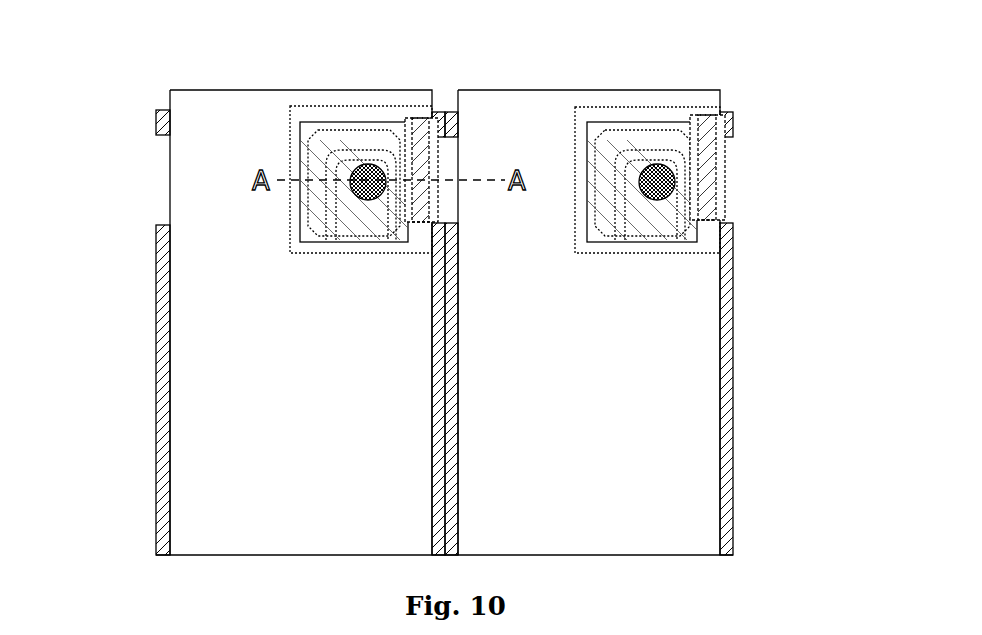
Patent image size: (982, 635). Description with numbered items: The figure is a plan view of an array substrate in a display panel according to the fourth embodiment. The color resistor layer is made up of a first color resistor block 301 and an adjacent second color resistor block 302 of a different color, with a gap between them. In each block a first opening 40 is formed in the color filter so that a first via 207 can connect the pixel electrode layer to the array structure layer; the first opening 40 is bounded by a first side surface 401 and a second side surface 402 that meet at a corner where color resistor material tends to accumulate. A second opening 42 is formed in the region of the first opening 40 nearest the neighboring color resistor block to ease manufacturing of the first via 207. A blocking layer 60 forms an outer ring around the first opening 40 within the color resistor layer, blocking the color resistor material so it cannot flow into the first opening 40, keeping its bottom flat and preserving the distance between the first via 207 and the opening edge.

The blocking layer 60 is at (289, 127).
The second side surface 402 is at (367, 122).
The first via 207 is at (642, 168).
The second opening 42 is at (728, 160).
The first side surface 401 is at (300, 162).
The first opening 40 is at (339, 219).
The first color resistor block 301 is at (190, 367).
The second color resistor block 302 is at (707, 343).